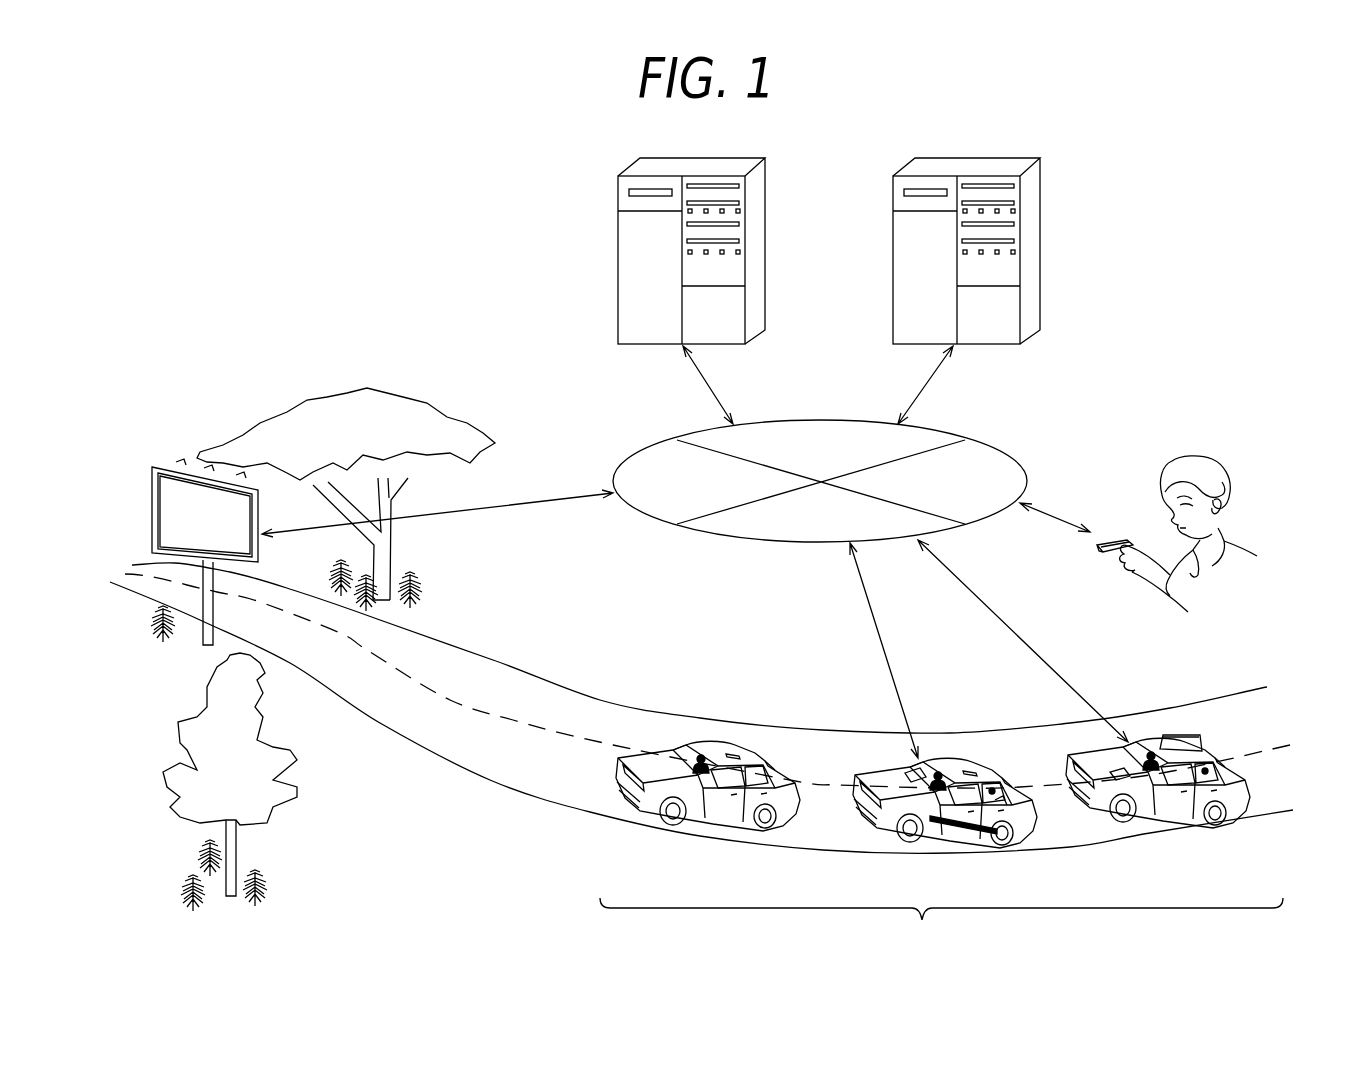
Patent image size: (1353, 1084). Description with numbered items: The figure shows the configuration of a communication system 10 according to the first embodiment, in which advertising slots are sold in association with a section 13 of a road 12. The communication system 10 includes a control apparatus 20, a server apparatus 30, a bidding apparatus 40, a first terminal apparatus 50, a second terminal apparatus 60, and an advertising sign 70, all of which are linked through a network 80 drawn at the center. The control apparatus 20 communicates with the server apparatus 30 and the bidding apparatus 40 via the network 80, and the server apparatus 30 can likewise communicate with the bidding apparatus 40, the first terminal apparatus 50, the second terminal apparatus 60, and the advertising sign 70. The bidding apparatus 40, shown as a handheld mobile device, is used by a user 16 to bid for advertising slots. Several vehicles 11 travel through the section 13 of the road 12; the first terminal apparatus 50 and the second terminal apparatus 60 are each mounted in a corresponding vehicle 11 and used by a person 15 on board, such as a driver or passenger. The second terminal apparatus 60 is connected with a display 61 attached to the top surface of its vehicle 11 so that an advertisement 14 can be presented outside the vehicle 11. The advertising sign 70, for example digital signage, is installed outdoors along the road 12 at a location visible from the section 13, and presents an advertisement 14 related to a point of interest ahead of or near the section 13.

The communication system 10 is at (438, 311).
The vehicle 11 is at (715, 808).
The road 12 is at (513, 690).
The section 13 is at (947, 827).
The advertisement 14 is at (218, 529).
The person 15 is at (1003, 800).
The user 16 is at (1235, 537).
The control apparatus 20 is at (760, 258).
The server apparatus 30 is at (1035, 258).
The bidding apparatus 40 is at (1098, 552).
The first terminal apparatus 50 is at (892, 775).
The second terminal apparatus 60 is at (1110, 772).
The display 61 is at (1197, 737).
The advertising sign 70 is at (160, 444).
The network 80 is at (1021, 451).